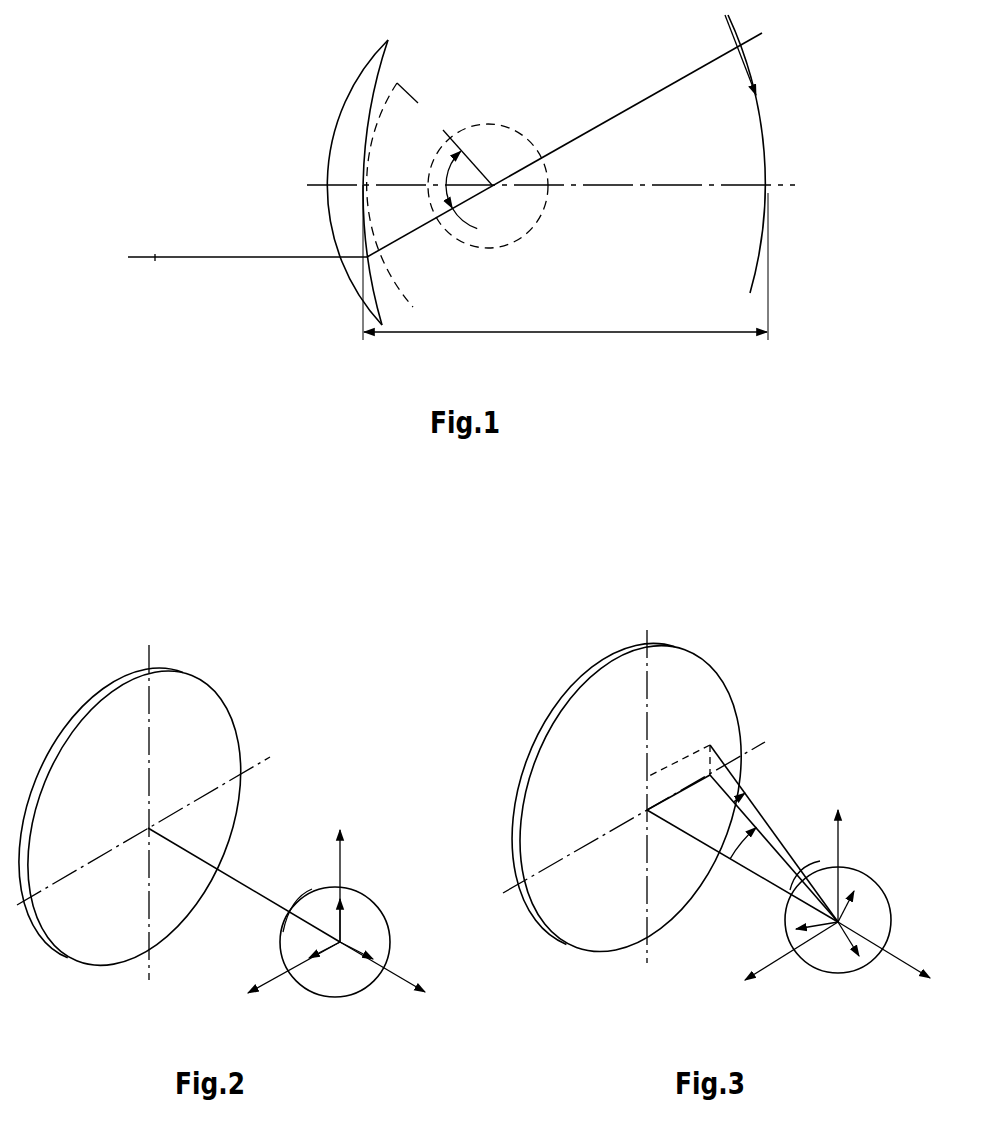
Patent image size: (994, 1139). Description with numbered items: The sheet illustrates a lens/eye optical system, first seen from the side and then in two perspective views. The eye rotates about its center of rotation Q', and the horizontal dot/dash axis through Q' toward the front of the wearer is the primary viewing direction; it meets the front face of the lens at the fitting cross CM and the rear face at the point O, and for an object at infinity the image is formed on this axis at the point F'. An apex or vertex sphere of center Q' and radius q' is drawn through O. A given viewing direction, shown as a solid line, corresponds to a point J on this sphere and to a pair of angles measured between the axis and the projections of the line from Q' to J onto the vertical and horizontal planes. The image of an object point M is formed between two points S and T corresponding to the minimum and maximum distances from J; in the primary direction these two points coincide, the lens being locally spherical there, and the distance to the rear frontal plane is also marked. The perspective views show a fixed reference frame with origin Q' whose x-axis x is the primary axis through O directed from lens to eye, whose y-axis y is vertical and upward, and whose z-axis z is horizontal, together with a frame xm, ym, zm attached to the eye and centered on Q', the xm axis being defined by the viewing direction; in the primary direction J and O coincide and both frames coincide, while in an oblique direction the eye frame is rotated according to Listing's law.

In FIG. 1, the fitting cross CM is at (533, 186).
In FIG. 1, the point O is at (357, 182).
In FIG. 2, the point O is at (140, 818).
In FIG. 3, the point O is at (630, 799).
In FIG. 1, the point M in the object space M is at (247, 275).
In FIG. 1, the point J on the apex sphere J is at (564, 154).
In FIG. 3, the point J on the apex sphere J is at (742, 828).
In FIG. 1, the radius of the apex sphere q' is at (429, 195).
In FIG. 1, the center of rotation of the eye Q' is at (488, 186).
In FIG. 2, the center of rotation of the eye Q' is at (269, 912).
In FIG. 3, the center of rotation of the eye Q' is at (769, 891).
In FIG. 1, the point S is at (746, 152).
In FIG. 1, the point T is at (730, 55).
In FIG. 1, the point F' is at (756, 251).
In FIG. 2, the x-axis x is at (382, 968).
In FIG. 3, the x-axis x is at (885, 950).
In FIG. 2, the y-axis y is at (347, 886).
In FIG. 3, the y-axis y is at (845, 866).
In FIG. 2, the z-axis z is at (294, 978).
In FIG. 3, the z-axis z is at (791, 960).
In FIG. 2, the xm axis xm is at (356, 959).
In FIG. 3, the xm axis xm is at (842, 946).
In FIG. 2, the ym axis ym is at (326, 919).
In FIG. 3, the ym axis ym is at (859, 906).
In FIG. 2, the zm axis zm is at (317, 945).
In FIG. 3, the zm axis zm is at (814, 919).